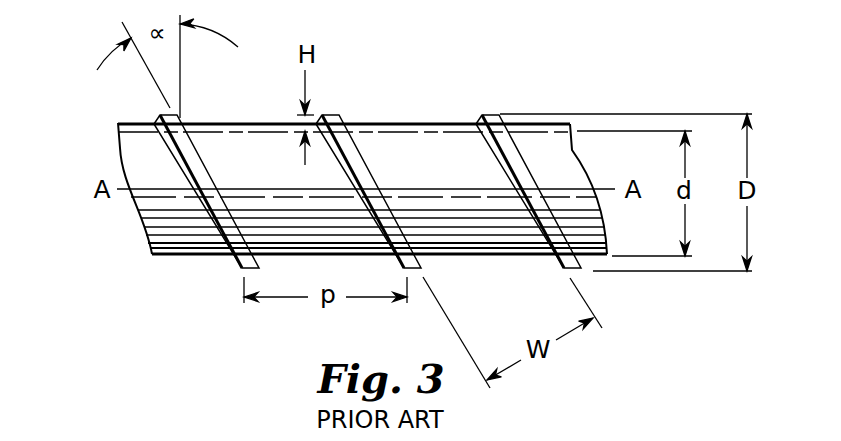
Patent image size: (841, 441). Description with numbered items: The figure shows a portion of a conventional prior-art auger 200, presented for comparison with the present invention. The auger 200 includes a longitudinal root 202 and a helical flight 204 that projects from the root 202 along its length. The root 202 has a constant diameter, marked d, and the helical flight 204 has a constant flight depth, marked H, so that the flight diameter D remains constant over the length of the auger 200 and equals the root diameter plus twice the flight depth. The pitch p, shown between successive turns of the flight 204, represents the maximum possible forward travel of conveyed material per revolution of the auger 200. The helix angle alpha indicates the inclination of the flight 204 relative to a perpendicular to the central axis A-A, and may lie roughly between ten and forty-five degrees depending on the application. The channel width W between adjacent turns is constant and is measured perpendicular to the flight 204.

The auger 200 is at (420, 72).
The longitudinal root 202 is at (135, 143).
The helical flight 204 is at (198, 163).